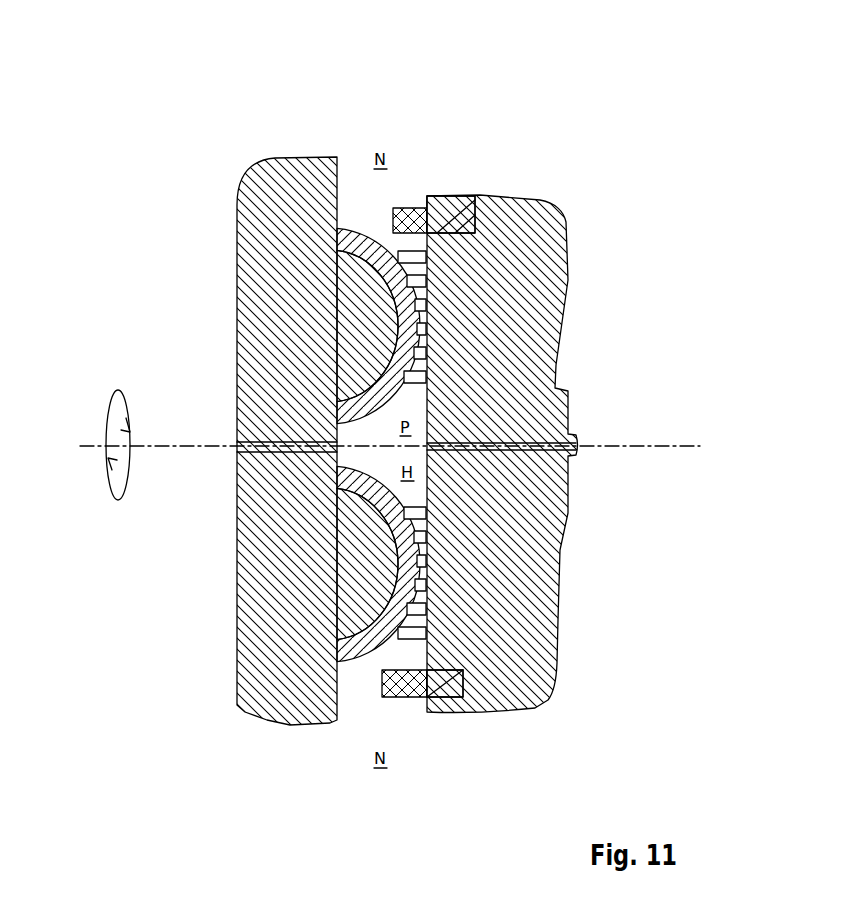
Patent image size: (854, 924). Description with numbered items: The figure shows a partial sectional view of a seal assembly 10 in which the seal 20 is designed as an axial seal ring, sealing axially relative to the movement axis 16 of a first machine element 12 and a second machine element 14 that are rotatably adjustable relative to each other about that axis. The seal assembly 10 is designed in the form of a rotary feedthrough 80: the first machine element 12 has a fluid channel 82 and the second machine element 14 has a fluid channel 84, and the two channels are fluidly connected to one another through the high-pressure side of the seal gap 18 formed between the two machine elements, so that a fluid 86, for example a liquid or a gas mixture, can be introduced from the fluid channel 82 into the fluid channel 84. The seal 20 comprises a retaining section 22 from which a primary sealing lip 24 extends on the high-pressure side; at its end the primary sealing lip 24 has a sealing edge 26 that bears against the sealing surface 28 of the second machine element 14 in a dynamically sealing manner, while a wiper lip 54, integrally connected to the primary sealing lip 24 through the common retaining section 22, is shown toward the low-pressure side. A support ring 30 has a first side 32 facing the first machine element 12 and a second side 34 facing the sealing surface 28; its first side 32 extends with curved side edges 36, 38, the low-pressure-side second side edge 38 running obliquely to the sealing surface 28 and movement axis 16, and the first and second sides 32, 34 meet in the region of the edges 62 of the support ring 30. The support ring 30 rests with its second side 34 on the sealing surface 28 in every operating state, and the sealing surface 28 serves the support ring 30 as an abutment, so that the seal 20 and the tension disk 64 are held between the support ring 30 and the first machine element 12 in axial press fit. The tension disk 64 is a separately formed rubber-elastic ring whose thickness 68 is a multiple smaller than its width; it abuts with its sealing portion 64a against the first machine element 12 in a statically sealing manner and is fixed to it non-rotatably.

The seal assembly 10 is at (708, 83).
The rotary feedthrough 80 is at (684, 98).
The first machine element 12 is at (521, 510).
The second machine element 14 is at (275, 525).
The movement axis 16 is at (598, 446).
The seal gap 18 is at (380, 728).
The seal 20 is at (560, 525).
The retaining section 22 is at (476, 196).
The primary sealing lip 24 is at (335, 412).
The sealing edge 26 is at (335, 414).
The sealing surface 28 is at (340, 694).
The support ring 30 is at (363, 306).
The first side 32 is at (430, 613).
The second side 34 is at (355, 306).
The side edge 36 is at (430, 398).
The second side edge 38 is at (397, 209).
The wiper lip 54 is at (545, 703).
The edge 62 is at (401, 441).
The tension disk 64 is at (427, 300).
The sealing portion 64a is at (427, 325).
The thickness 68 is at (148, 758).
The fluid channel 82 is at (569, 460).
The fluid channel 84 is at (240, 462).
The fluid 86 is at (571, 437).